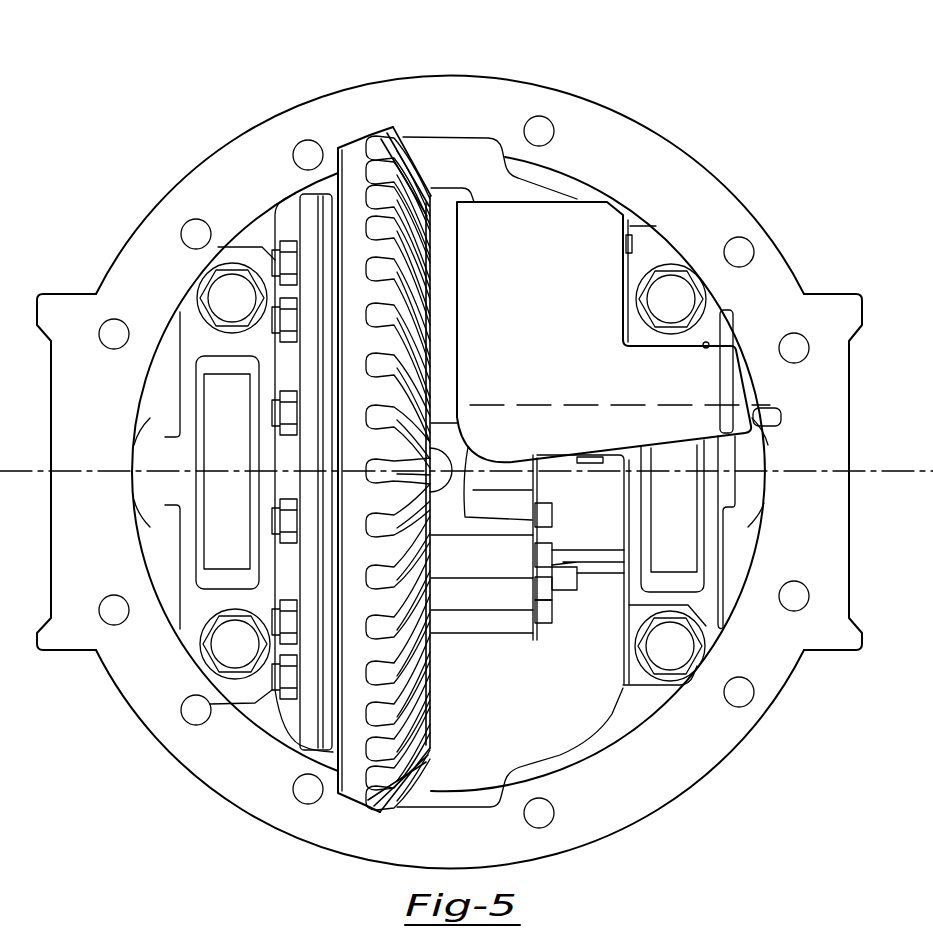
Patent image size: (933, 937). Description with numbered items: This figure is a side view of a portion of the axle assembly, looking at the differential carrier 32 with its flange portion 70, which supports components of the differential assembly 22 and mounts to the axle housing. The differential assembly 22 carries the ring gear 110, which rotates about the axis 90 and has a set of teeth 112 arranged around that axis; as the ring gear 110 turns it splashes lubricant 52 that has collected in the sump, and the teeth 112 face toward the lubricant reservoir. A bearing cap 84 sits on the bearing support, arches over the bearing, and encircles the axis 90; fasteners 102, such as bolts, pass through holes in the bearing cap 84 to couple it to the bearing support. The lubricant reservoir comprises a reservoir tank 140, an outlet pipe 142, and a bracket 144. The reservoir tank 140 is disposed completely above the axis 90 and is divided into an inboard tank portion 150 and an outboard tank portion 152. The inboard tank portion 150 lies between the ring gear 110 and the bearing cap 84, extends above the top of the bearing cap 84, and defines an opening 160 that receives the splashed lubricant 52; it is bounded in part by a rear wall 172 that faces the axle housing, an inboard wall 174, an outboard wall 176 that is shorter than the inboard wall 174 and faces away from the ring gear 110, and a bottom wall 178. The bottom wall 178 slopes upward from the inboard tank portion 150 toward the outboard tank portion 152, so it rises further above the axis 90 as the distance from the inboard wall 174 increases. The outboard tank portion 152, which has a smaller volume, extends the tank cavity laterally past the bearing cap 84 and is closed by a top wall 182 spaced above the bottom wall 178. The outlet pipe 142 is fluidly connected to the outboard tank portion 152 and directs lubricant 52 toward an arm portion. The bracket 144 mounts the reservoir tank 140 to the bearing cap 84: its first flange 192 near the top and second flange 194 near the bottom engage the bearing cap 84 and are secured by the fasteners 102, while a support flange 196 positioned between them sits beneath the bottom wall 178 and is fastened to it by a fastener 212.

The differential assembly 22 is at (290, 724).
The differential carrier 32 is at (449, 471).
The flange portion 70 is at (449, 471).
The lubricant 52 is at (593, 402).
The bearing cap 84 is at (236, 509).
The axis 90 is at (868, 476).
The fastener 102 is at (245, 310).
The ring gear 110 is at (398, 414).
The teeth 112 is at (407, 150).
The reservoir tank 140 is at (613, 258).
The outlet pipe 142 is at (782, 417).
The bracket 144 is at (581, 569).
The inboard tank portion 150 is at (457, 361).
The outboard tank portion 152 is at (746, 351).
The opening 160 is at (613, 258).
The rear wall 172 is at (613, 332).
The inboard wall 174 is at (430, 268).
The outboard wall 176 is at (708, 261).
The bottom wall 178 is at (533, 492).
The top wall 182 is at (705, 350).
The first flange 192 is at (692, 250).
The second flange 194 is at (640, 686).
The support flange 196 is at (566, 462).
The fastener 212 is at (603, 465).